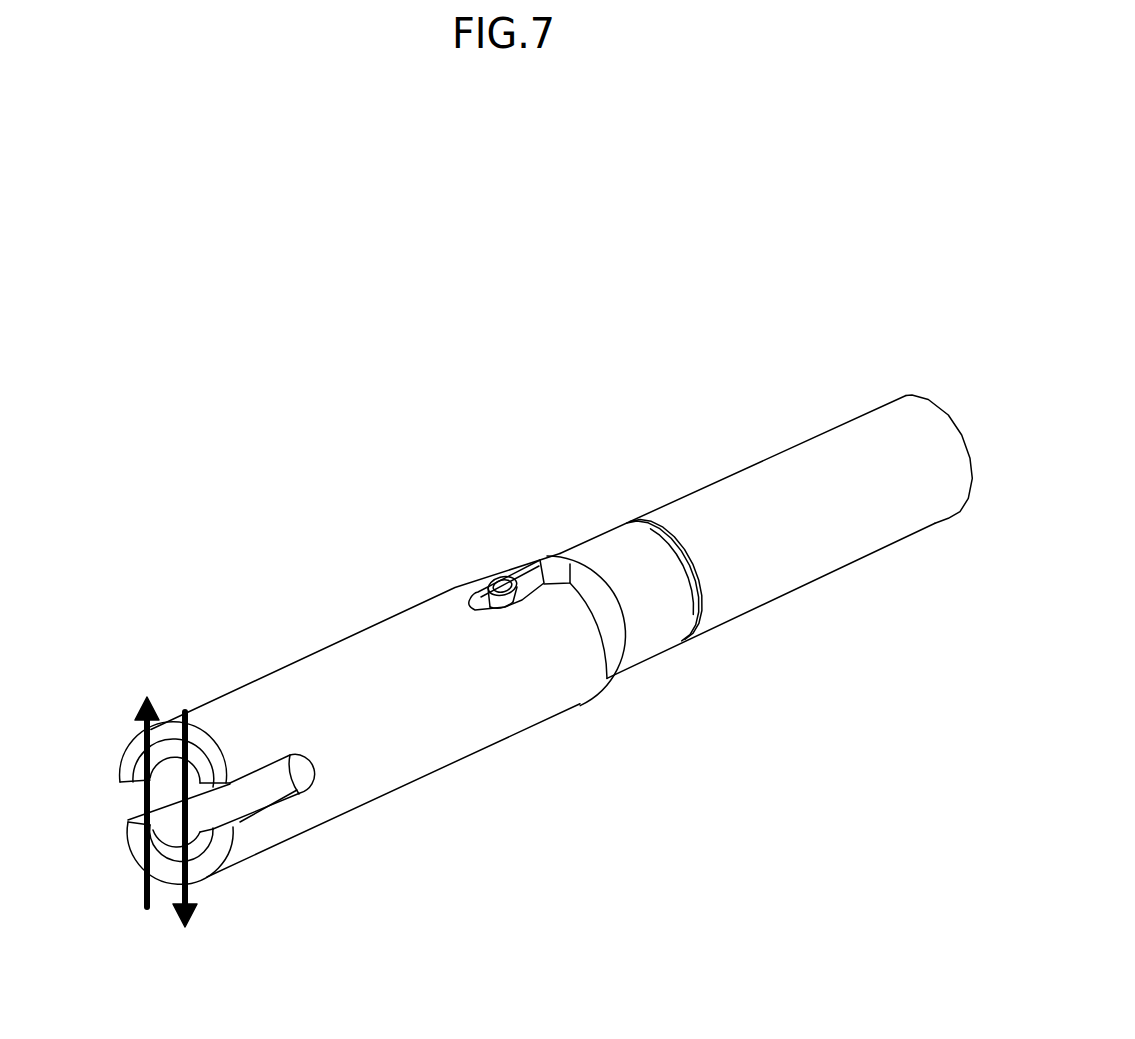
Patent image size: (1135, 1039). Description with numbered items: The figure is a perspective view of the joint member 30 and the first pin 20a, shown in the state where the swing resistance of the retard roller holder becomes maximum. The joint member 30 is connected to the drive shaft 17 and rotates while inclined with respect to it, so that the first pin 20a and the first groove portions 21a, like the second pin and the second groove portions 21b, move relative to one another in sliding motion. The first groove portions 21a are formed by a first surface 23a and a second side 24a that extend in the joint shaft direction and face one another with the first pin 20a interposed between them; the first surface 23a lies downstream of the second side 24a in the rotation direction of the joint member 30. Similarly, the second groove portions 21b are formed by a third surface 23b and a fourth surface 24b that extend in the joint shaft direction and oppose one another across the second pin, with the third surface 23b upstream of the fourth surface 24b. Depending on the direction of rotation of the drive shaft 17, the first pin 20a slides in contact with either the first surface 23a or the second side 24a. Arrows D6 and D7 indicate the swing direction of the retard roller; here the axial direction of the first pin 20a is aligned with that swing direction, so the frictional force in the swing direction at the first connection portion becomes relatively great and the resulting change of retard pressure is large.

The drive shaft 17 is at (720, 481).
The first pin 20a is at (493, 583).
The first groove portions 21a is at (522, 438).
The second groove portions 21b is at (348, 777).
The first surface 23a is at (528, 573).
The third surface 23b is at (281, 797).
The second side 24a is at (560, 556).
The fourth surface 24b is at (268, 776).
The joint member 30 is at (383, 620).
The arrow D6 direction D6 is at (143, 718).
The arrow D7 direction D7 is at (190, 890).